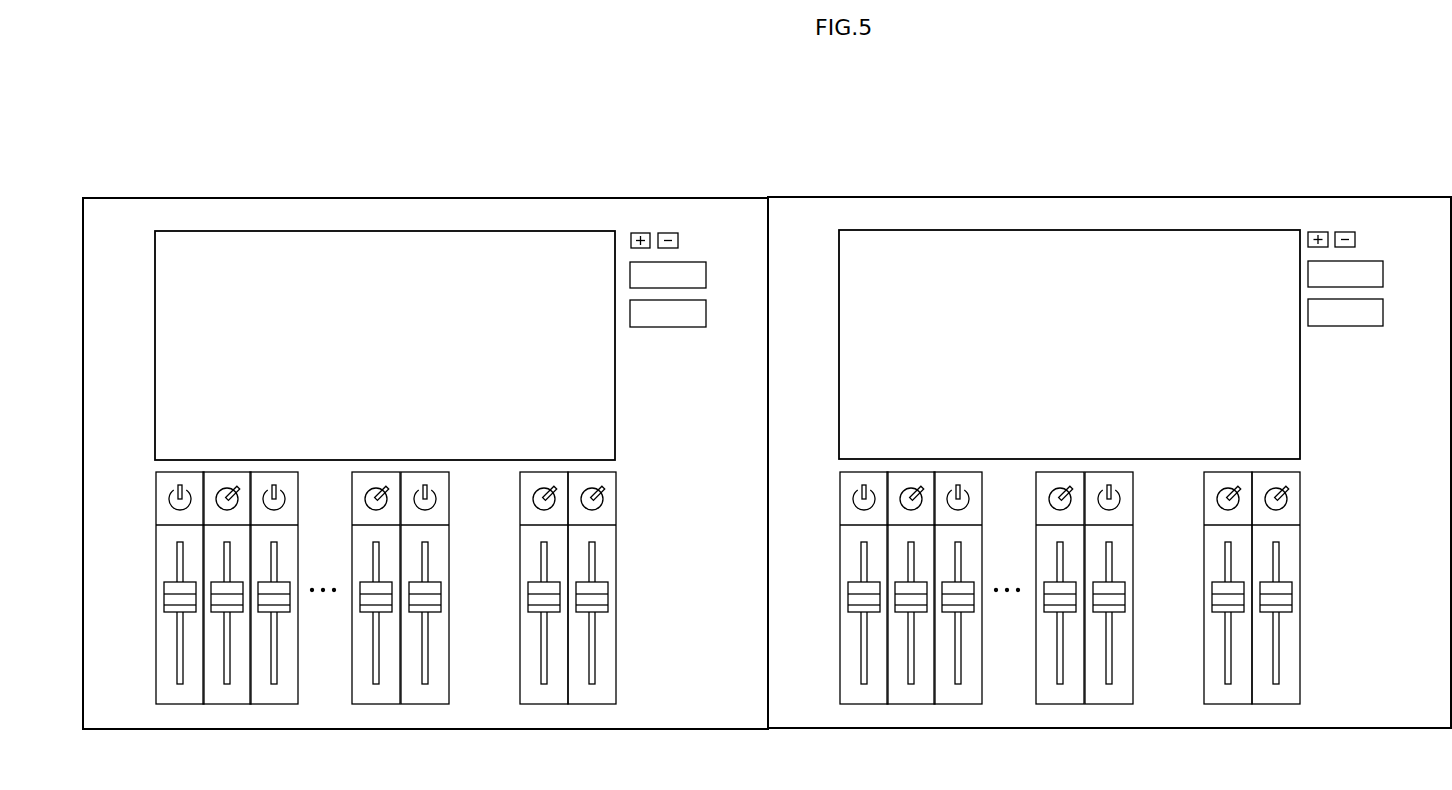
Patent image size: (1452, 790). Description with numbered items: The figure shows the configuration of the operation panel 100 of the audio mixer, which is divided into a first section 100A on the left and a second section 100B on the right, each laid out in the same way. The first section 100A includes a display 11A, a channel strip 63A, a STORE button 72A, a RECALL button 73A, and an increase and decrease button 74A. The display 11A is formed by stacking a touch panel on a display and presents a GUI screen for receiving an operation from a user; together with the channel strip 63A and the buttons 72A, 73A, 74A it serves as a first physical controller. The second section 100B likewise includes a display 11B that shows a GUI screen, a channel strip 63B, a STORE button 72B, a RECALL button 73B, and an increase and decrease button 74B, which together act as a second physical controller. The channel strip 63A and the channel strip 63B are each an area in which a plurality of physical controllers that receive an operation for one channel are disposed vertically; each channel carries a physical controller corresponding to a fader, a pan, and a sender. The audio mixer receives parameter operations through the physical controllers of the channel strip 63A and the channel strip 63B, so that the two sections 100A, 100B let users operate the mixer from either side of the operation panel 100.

The operation panel 100 is at (1162, 100).
The first section 100A is at (729, 187).
The second section 100B is at (1364, 187).
The display 11A is at (384, 231).
The display 11B is at (1068, 230).
The increase and decrease button 74A is at (697, 242).
The increase and decrease button 74B is at (1374, 241).
The STORE button 72A is at (706, 277).
The STORE button 72B is at (1383, 276).
The RECALL button 73A is at (706, 315).
The RECALL button 73B is at (1383, 314).
The channel strip 63A is at (145, 707).
The channel strip 63B is at (829, 707).